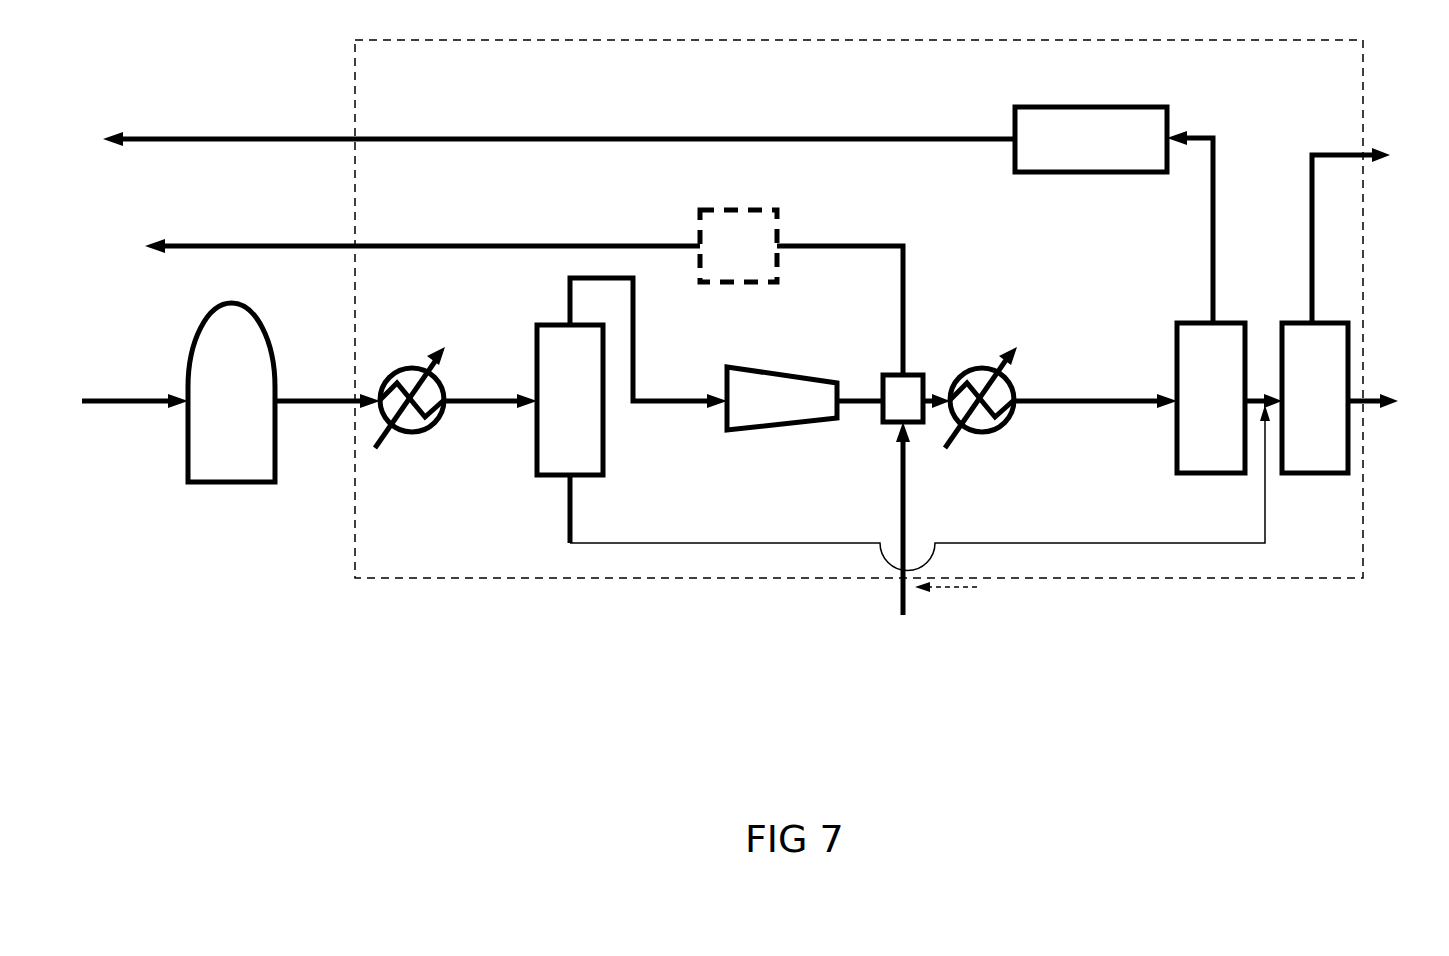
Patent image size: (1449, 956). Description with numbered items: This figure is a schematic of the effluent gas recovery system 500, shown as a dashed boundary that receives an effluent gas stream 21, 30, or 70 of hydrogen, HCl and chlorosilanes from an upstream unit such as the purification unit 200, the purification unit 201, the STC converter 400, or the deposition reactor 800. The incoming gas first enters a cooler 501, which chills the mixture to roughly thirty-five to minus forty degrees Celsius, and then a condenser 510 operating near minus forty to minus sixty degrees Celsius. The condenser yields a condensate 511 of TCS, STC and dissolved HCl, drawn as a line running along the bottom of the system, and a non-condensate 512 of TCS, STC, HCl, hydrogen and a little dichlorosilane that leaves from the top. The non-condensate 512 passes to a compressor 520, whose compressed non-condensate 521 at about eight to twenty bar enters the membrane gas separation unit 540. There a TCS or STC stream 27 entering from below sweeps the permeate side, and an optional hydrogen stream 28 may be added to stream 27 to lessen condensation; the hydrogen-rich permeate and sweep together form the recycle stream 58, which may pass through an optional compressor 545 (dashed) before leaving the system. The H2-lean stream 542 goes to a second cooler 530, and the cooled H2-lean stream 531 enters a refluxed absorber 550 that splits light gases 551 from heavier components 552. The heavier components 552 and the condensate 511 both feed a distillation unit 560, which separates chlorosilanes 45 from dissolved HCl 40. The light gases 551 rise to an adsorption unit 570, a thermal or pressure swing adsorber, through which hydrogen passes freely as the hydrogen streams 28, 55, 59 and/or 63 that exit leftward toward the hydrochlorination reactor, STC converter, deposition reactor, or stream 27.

The effluent gas recovery system 500 is at (665, 578).
The purification unit 200 is at (201, 455).
The purification unit 201 is at (201, 455).
The STC converter 400 is at (201, 455).
The deposition reactor 800 is at (242, 482).
The effluent gas stream 21 is at (327, 508).
The effluent gas stream 30 is at (327, 508).
The effluent gas stream 70 is at (327, 401).
The cooler 501 is at (412, 432).
The condenser 510 is at (603, 467).
The condensate 511 is at (568, 510).
The non-condensate 512 is at (567, 284).
The compressor 520 is at (780, 430).
The compressed non-condensate 521 is at (850, 398).
The compressor 545 is at (717, 282).
The recycle stream 58 is at (273, 246).
The gas separation unit 540 is at (893, 422).
The TCS or STC stream 27 is at (911, 533).
The hydrogen stream 28 is at (963, 591).
The H2-lean stream 542 is at (930, 395).
The cooler 530 is at (982, 432).
The cooled H2-lean stream 531 is at (1075, 398).
The refluxed absorber 550 is at (1177, 460).
The light gases 551 is at (1255, 210).
The heavier components 552 is at (1253, 390).
The adsorption unit 570 is at (1140, 172).
The hydrogen stream 55 is at (559, 99).
The hydrogen stream 59 is at (559, 99).
The hydrogen stream 63 is at (280, 78).
The distillation unit 560 is at (1337, 473).
The dissolved HCl 40 is at (1380, 233).
The chlorosilanes 45 is at (1390, 400).